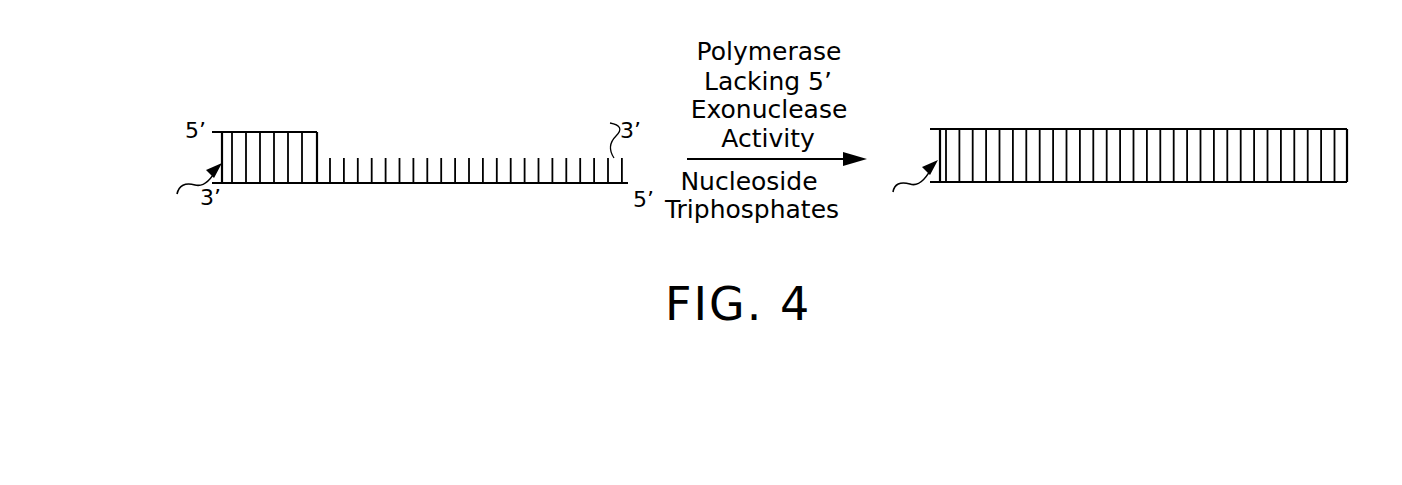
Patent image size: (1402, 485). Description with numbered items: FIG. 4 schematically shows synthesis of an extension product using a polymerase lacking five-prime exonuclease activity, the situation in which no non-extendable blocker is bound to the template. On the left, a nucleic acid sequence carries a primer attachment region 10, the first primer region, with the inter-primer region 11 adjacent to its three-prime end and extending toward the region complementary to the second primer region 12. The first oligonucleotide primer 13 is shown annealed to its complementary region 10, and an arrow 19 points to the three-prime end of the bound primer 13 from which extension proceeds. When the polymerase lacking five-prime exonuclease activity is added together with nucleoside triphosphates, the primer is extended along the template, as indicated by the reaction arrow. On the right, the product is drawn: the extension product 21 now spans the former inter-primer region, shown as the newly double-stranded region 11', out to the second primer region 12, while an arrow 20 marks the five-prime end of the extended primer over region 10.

The first primer region 10 is at (258, 183).
The inter-primer region 11 is at (476, 204).
The region of template rendered double-stranded by extension 11' is at (1140, 217).
The second primer region 12 is at (1261, 128).
The first oligonucleotide primer 13 is at (264, 132).
The arrow indicating primer 3' end 19 is at (191, 194).
The arrow indicating extended primer 5' end 20 is at (906, 191).
The primer extension product 21 is at (1112, 132).